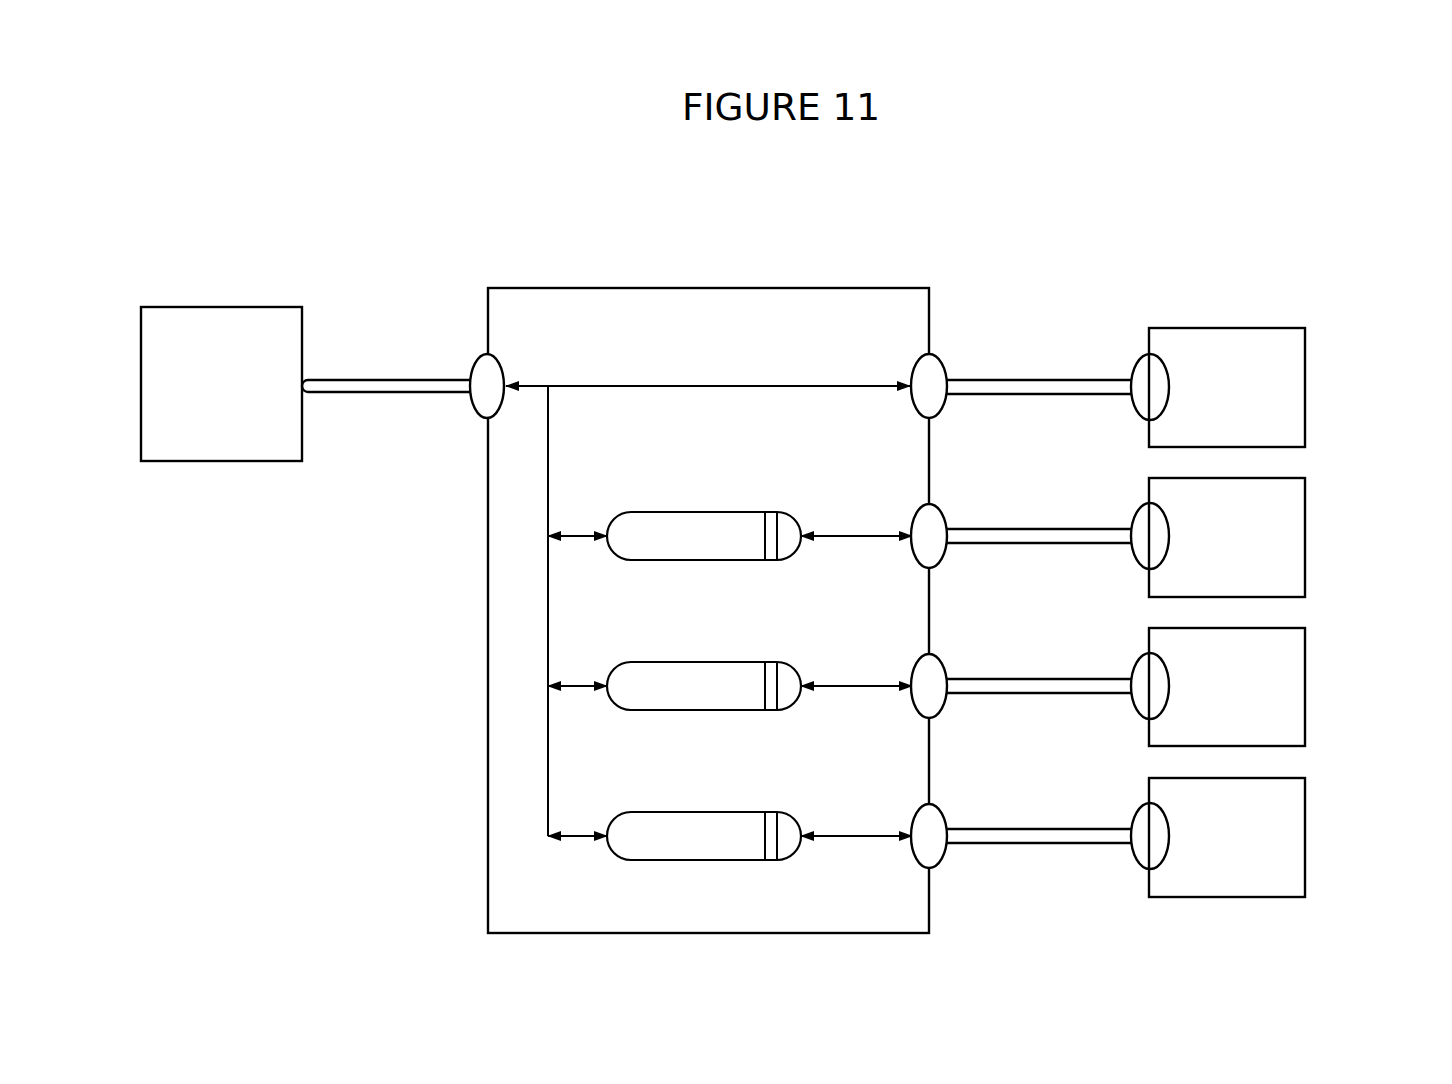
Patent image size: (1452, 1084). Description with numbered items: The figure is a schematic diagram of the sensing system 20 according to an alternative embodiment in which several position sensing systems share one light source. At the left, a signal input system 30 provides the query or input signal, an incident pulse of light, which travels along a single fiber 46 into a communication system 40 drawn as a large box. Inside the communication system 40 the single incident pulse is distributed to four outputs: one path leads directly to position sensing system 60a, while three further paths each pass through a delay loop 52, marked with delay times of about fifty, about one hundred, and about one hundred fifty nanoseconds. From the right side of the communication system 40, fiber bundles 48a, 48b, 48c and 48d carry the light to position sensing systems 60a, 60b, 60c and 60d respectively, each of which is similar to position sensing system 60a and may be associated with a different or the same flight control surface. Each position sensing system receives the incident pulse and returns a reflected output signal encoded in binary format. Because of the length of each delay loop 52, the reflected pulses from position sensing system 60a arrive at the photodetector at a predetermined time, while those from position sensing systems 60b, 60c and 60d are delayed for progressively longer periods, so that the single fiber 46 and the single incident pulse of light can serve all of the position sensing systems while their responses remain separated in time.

The sensing system 20 is at (1204, 147).
The signal input system 30 is at (281, 307).
The communication system 40 is at (786, 288).
The single fiber 46 is at (393, 377).
The fiber bundle 48a is at (1046, 380).
The fiber bundle 48b is at (1038, 529).
The fiber bundle 48c is at (1066, 679).
The fiber bundle 48d is at (1040, 829).
The delay loop 52 is at (750, 560).
The position sensing system 60a is at (1305, 359).
The position sensing system 60b is at (1305, 511).
The position sensing system 60c is at (1305, 661).
The position sensing system 60d is at (1305, 811).